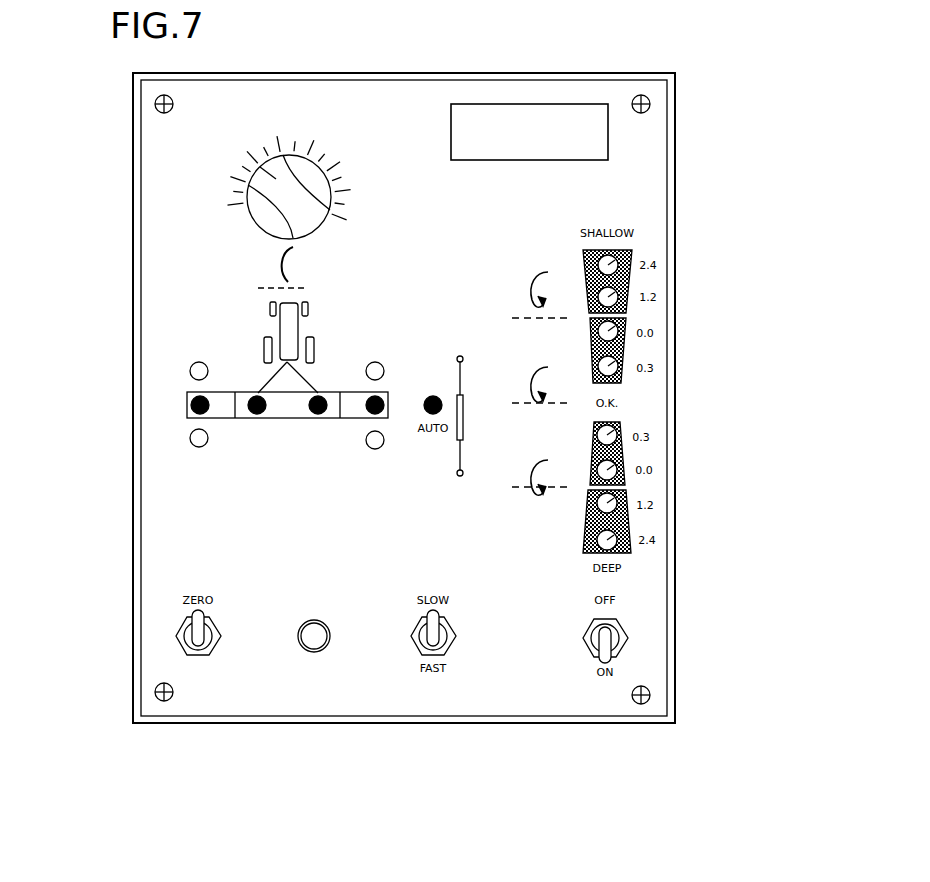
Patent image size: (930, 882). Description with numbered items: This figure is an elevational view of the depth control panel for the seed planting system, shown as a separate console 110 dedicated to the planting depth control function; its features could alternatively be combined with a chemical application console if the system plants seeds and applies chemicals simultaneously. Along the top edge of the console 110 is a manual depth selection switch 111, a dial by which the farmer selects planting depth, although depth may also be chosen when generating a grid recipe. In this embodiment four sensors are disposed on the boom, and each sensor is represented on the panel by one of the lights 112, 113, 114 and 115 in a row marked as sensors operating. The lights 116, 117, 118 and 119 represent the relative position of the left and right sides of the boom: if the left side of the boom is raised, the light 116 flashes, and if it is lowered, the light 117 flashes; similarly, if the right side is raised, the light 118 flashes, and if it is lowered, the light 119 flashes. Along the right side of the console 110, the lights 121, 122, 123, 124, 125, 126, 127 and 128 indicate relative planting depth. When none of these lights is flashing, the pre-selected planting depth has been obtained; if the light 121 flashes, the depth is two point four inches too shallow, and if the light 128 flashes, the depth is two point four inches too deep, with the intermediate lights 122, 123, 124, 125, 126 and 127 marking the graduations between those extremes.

The console 110 is at (692, 92).
The manual depth selection switch 111 is at (262, 230).
The light 112 is at (192, 409).
The light 113 is at (257, 396).
The light 114 is at (318, 396).
The light 115 is at (384, 405).
The light 116 is at (190, 371).
The light 117 is at (190, 438).
The light 118 is at (384, 371).
The light 119 is at (368, 440).
The light 121 is at (616, 262).
The light 122 is at (616, 296).
The light 123 is at (616, 329).
The light 124 is at (616, 370).
The light 125 is at (615, 430).
The light 126 is at (615, 468).
The light 127 is at (615, 505).
The light 128 is at (615, 548).